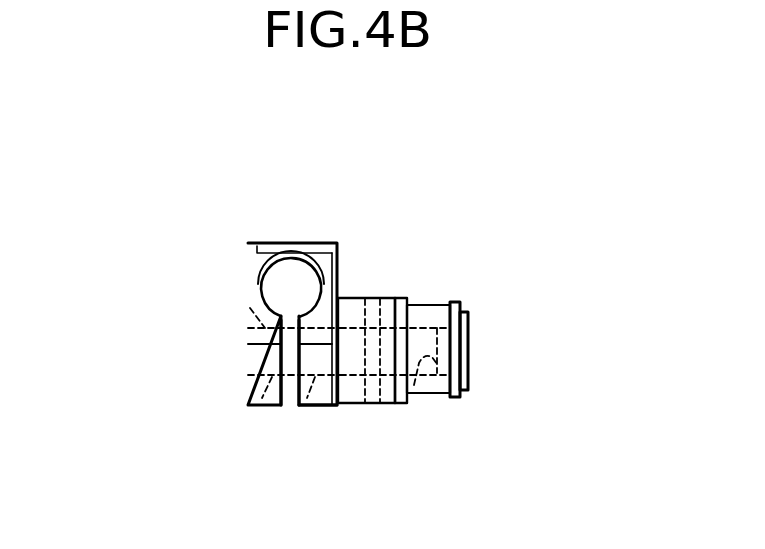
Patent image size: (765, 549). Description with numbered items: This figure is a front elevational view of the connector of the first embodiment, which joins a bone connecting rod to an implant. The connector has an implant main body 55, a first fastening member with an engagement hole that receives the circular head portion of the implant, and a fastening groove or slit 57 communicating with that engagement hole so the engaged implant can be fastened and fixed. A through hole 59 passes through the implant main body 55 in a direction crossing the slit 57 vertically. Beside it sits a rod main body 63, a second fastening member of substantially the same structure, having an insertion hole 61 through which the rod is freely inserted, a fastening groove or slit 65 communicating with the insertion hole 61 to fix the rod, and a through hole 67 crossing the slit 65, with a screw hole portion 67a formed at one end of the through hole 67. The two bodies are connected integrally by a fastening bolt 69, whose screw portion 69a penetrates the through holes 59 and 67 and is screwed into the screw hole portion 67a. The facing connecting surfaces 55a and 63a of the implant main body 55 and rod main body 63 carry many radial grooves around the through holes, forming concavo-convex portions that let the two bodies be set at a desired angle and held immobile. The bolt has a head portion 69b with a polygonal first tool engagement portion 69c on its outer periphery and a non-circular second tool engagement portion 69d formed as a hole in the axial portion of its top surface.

The implant main body 55 is at (355, 387).
The connecting surface 55a is at (330, 403).
The fastening groove (slit) 57 is at (390, 297).
The through hole 59 is at (350, 326).
The insertion hole 61 is at (273, 281).
The rod main body 63 is at (247, 227).
The connecting surface 63a is at (340, 261).
The fastening groove (slit) 65 is at (288, 405).
The through hole 67 is at (302, 405).
The screw hole portion 67a is at (250, 408).
The fastening bolt 69 is at (460, 293).
The screw portion 69a is at (248, 304).
The head portion 69b is at (465, 393).
The first tool engagement portion 69c is at (436, 385).
The second tool engagement portion 69d is at (414, 385).